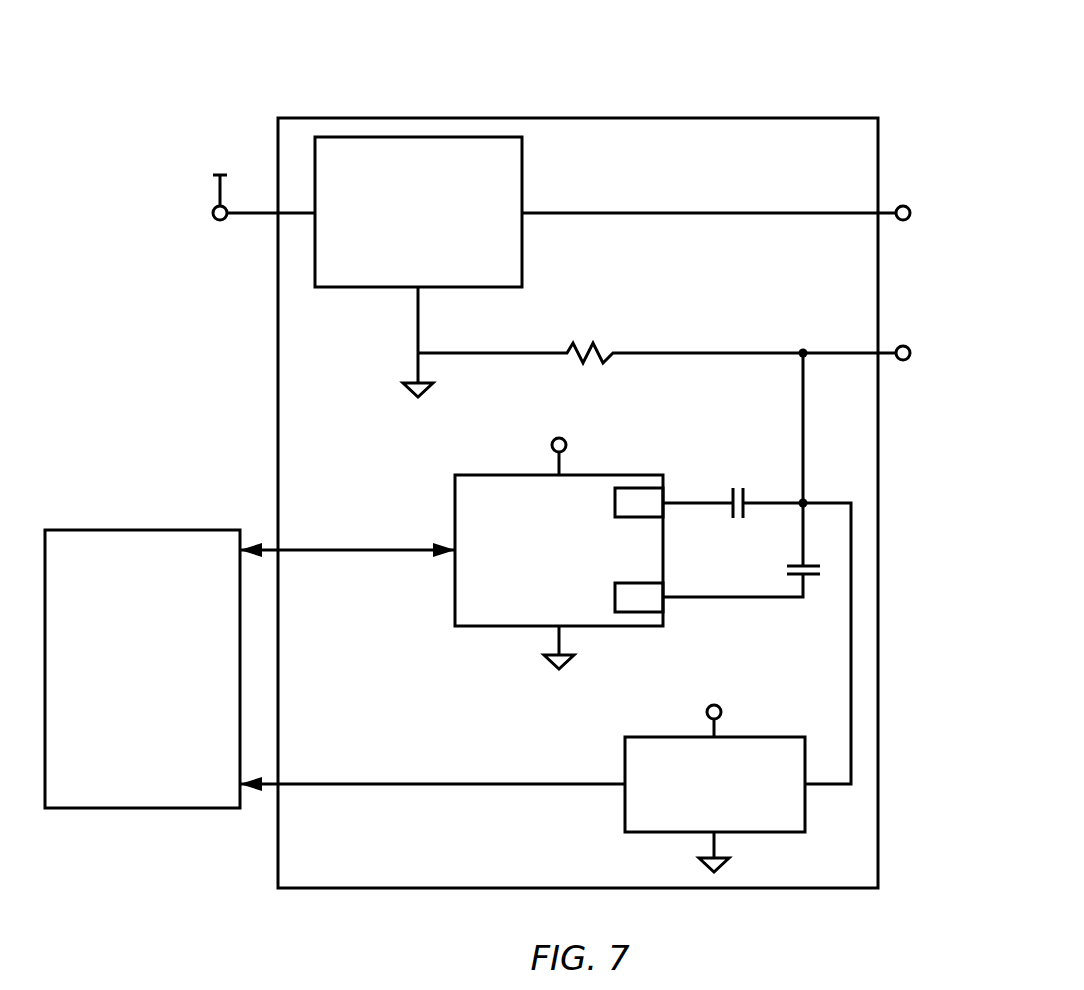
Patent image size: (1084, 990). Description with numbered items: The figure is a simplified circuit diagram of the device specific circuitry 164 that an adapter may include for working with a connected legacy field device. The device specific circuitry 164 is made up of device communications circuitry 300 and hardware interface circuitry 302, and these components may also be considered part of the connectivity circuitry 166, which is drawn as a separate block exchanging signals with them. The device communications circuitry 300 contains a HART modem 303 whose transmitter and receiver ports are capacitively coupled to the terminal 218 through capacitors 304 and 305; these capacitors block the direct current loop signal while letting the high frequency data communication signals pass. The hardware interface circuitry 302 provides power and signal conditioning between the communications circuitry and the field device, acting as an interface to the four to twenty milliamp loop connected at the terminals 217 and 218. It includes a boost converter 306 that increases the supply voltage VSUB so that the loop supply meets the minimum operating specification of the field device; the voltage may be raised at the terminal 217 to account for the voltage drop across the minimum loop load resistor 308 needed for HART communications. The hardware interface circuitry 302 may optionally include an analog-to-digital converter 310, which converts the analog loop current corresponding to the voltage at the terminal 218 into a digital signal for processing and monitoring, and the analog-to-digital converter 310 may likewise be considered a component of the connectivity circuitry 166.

The device specific circuitry 164 is at (790, 72).
The connectivity circuitry 166 is at (142, 669).
The terminal 217 is at (906, 206).
The terminal 218 is at (905, 346).
The device communications circuitry 300 is at (342, 858).
The hardware interface circuitry 302 is at (322, 384).
The HART modem 303 is at (483, 485).
The capacitor 304 is at (733, 490).
The capacitor 305 is at (790, 566).
The boost converter 306 is at (370, 148).
The minimum loop load resistor 308 is at (600, 343).
The analog-to-digital converter 310 is at (643, 745).